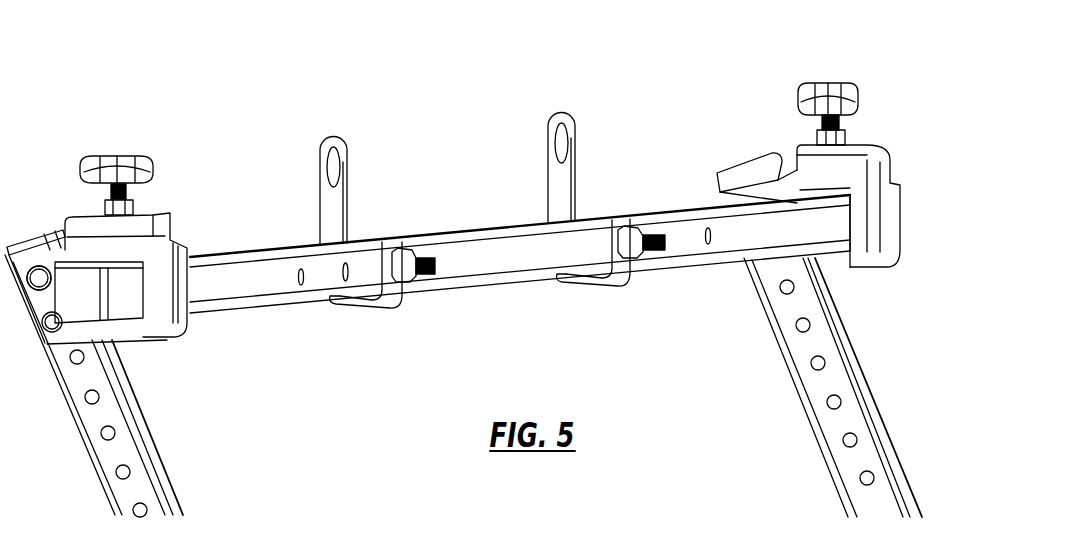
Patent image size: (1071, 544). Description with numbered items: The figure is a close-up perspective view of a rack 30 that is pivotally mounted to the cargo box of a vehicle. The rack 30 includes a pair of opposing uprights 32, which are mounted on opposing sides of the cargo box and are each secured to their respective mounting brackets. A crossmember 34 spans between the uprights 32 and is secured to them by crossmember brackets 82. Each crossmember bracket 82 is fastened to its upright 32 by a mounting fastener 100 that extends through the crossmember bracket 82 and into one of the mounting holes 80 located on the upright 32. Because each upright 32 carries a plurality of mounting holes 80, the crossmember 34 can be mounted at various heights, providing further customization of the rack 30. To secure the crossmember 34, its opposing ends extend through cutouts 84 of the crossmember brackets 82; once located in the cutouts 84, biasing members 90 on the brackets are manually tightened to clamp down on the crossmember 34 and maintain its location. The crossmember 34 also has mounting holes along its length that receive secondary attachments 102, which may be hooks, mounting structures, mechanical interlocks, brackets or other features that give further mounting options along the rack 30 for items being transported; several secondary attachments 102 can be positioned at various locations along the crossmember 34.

The rack 30 is at (96, 90).
The upright 32 is at (87, 423).
The crossmember 34 is at (276, 283).
The mounting holes 80 is at (116, 433).
The crossmember bracket 82 is at (142, 238).
The cutout 84 is at (152, 329).
The biasing member 90 is at (142, 166).
The mounting fastener 100 is at (39, 277).
The secondary attachment 102 is at (335, 202).